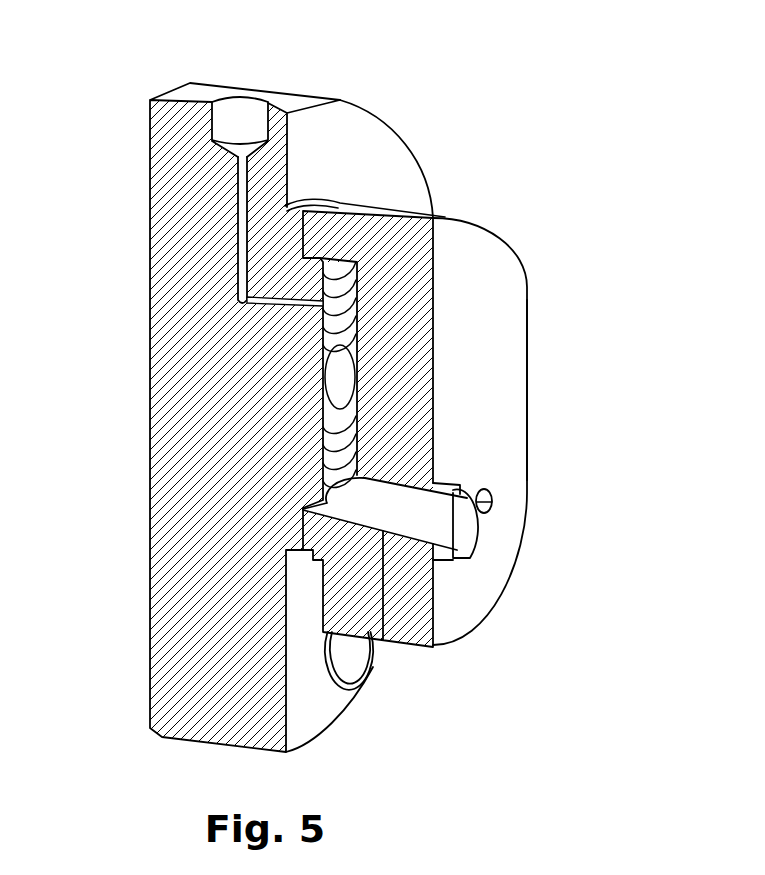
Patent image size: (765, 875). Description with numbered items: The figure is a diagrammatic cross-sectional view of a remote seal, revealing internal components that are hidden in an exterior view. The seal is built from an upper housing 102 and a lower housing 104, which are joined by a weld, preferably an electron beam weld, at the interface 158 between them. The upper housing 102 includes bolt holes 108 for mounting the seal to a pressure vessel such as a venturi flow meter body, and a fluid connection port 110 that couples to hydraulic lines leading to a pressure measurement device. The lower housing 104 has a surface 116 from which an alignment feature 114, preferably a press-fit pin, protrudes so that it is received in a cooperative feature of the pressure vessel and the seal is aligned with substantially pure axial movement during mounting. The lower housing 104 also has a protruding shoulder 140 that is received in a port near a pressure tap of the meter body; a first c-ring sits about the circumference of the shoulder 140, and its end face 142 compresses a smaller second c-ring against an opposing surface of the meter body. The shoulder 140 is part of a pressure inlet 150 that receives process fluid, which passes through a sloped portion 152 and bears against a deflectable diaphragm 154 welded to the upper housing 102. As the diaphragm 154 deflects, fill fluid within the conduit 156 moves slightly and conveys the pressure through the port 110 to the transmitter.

The upper housing 102 is at (340, 100).
The lower housing 104 is at (492, 233).
The bolt holes 108 is at (362, 665).
The fluid connection port 110 is at (268, 102).
The alignment feature 114 is at (493, 500).
The surface 116 is at (485, 403).
The protruding shoulder 140 is at (470, 545).
The end face 142 is at (470, 557).
The pressure inlet 150 is at (443, 532).
The sloped portion 152 is at (350, 658).
The deflectable diaphragm 154 is at (345, 307).
The conduit 156 is at (238, 270).
The interface 158 is at (313, 205).